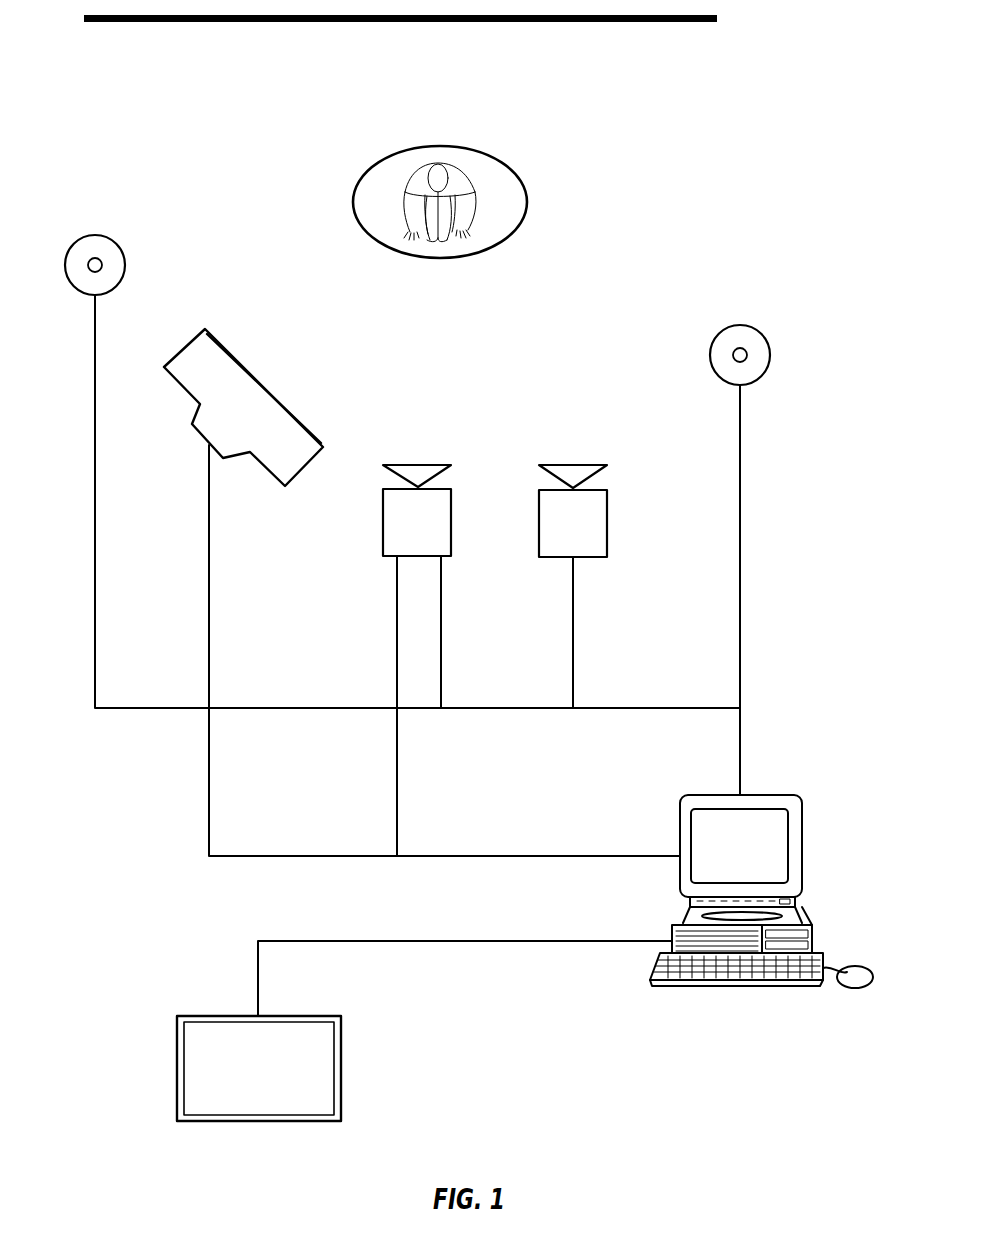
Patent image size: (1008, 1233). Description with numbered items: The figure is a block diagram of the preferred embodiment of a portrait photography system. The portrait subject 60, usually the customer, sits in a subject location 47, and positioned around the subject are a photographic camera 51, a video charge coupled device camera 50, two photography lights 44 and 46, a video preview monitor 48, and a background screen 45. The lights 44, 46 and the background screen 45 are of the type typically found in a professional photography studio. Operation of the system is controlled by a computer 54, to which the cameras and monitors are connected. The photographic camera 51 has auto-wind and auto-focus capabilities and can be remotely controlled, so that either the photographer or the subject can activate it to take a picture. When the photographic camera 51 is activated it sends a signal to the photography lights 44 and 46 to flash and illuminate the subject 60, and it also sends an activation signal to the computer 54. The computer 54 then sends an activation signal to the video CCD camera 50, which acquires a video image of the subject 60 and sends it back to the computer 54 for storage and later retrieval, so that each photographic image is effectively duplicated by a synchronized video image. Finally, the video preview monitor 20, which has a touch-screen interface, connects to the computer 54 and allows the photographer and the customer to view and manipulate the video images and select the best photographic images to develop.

The video preview monitor 20 is at (341, 1040).
The photography light 44 is at (770, 353).
The background screen 45 is at (737, 18).
The photography light 46 is at (125, 263).
The subject location 47 is at (529, 203).
The video preview monitor 48 is at (272, 382).
The video charge coupled device (CCD) camera 50 is at (383, 549).
The photographic camera 51 is at (607, 503).
The computer 54 is at (802, 818).
The portrait subject 60 is at (397, 203).